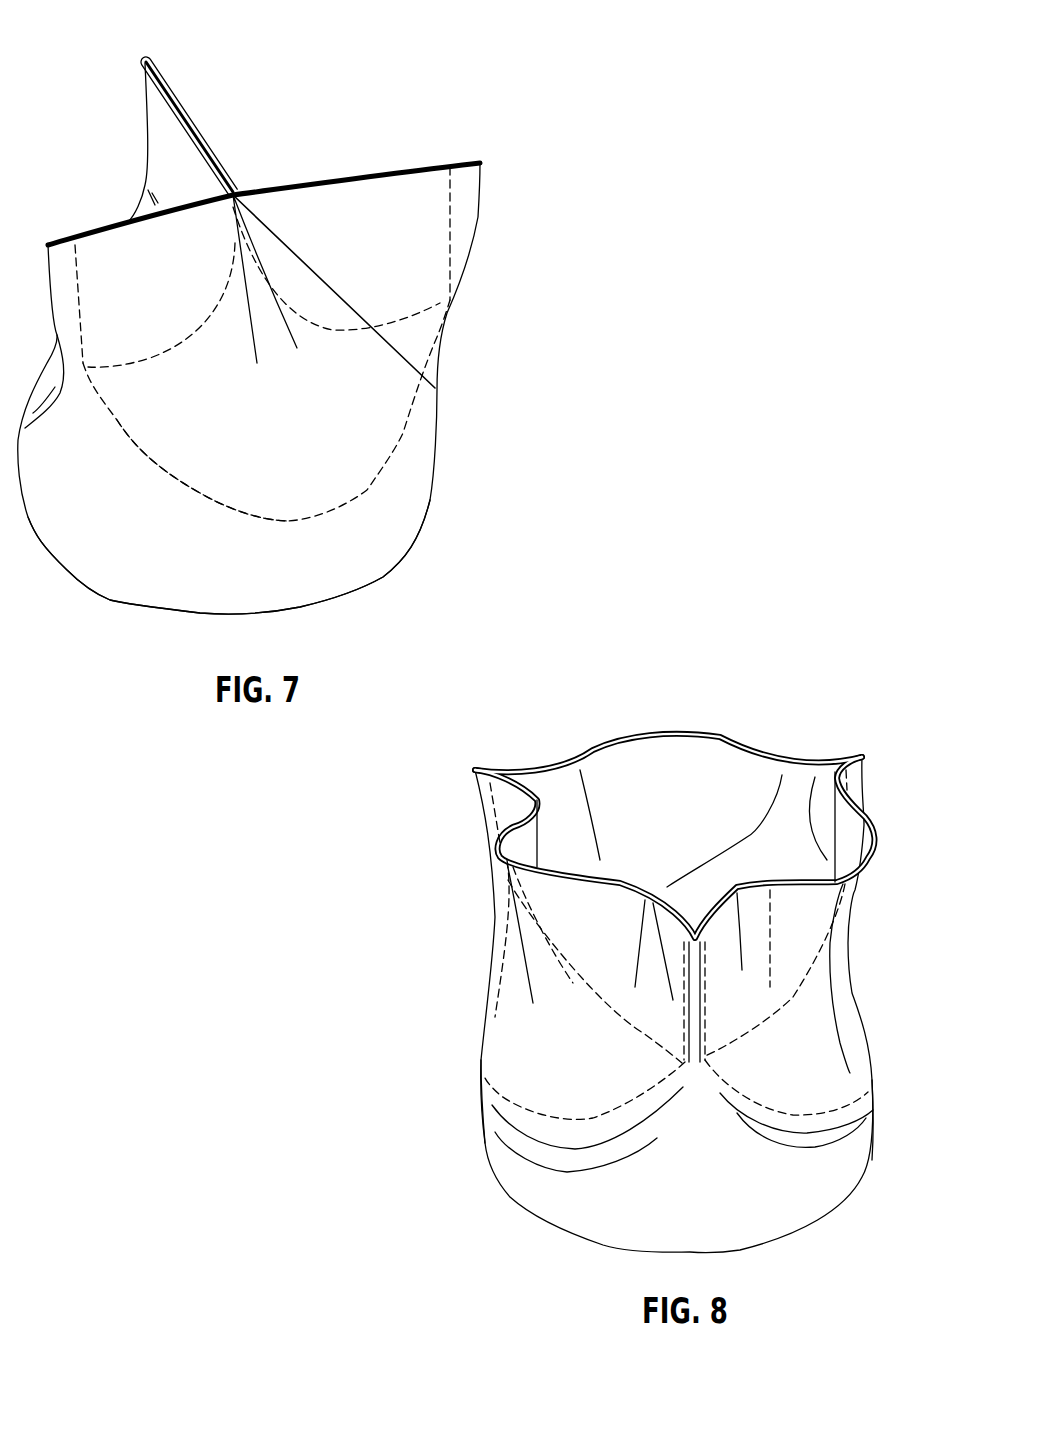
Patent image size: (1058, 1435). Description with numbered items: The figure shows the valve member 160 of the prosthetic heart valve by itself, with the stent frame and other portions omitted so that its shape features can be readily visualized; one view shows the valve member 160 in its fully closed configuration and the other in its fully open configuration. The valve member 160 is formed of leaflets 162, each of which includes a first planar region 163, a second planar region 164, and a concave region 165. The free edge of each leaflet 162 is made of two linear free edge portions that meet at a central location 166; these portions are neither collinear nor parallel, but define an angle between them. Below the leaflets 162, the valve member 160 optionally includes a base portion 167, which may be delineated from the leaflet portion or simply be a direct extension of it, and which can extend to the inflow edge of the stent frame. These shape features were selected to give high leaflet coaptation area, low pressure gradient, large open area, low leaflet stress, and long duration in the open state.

In FIG. 7, the valve member 160 is at (378, 86).
In FIG. 8, the valve member 160 is at (784, 674).
In FIG. 7, the leaflet 162 is at (187, 440).
In FIG. 8, the leaflet 162 is at (503, 1041).
In FIG. 7, the first planar region 163 is at (196, 184).
In FIG. 8, the first planar region 163 is at (822, 924).
In FIG. 7, the second planar region 164 is at (379, 259).
In FIG. 8, the second planar region 164 is at (617, 949).
In FIG. 7, the concave region 165 is at (304, 436).
In FIG. 8, the concave region 165 is at (562, 1061).
In FIG. 7, the central location 166 is at (235, 191).
In FIG. 8, the central location 166 is at (675, 731).
In FIG. 7, the base portion 167 is at (252, 579).
In FIG. 8, the base portion 167 is at (722, 1199).